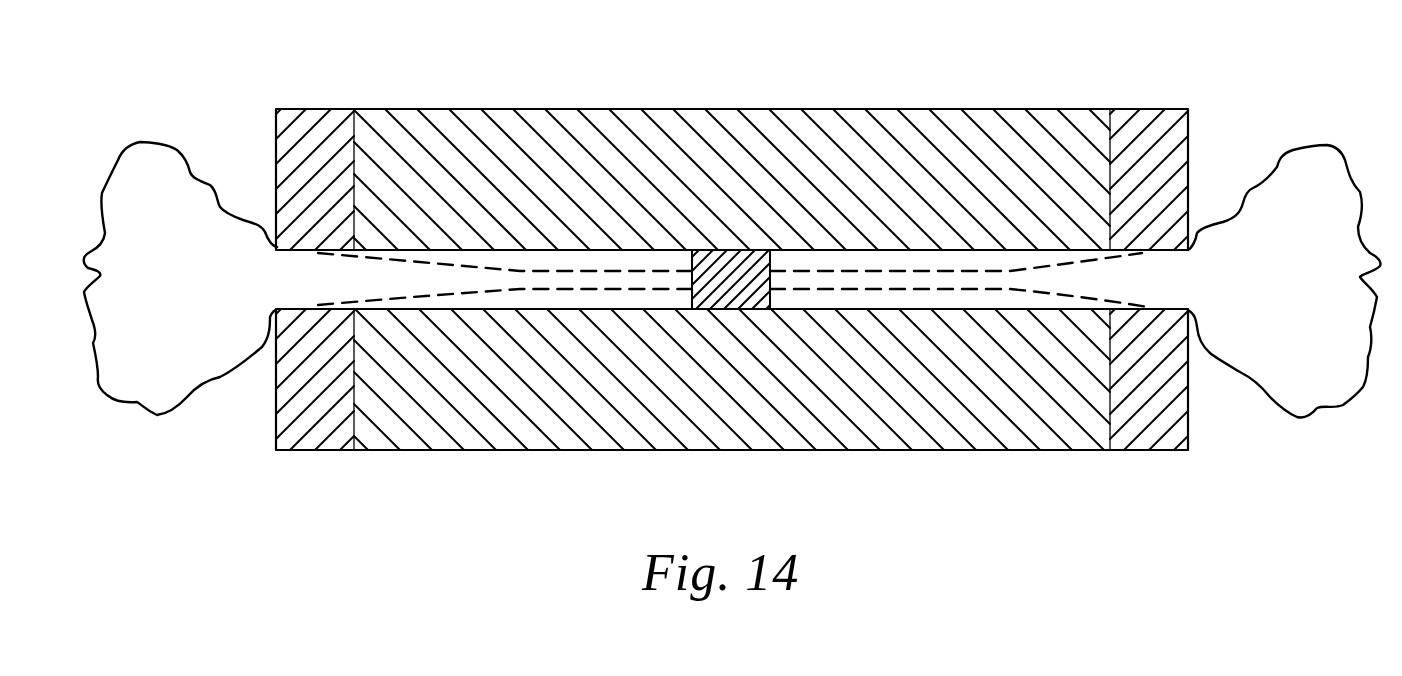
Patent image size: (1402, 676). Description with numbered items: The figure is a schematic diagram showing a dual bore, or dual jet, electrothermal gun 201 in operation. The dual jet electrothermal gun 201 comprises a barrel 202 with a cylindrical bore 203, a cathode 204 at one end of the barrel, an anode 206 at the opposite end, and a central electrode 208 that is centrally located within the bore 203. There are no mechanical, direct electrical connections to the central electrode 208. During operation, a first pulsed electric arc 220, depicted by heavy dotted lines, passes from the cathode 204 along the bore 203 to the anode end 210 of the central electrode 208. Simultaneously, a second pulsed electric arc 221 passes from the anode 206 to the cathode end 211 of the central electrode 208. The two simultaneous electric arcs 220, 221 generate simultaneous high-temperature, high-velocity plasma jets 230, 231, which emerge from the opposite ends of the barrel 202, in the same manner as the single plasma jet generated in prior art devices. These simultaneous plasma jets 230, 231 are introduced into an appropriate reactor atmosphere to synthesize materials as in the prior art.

The dual jet electrothermal gun 201 is at (418, 496).
The barrel 202 is at (710, 450).
The cylindrical bore 203 is at (1146, 282).
The cathode 204 is at (334, 109).
The anode 206 is at (1143, 109).
The central electrode 208 is at (733, 250).
The anode end 210 is at (692, 305).
The cathode end 211 is at (770, 298).
The first pulsed electric arc 220 is at (552, 271).
The second pulsed electric arc 221 is at (833, 271).
The plasma jet 230 is at (196, 170).
The plasma jet 231 is at (1293, 150).